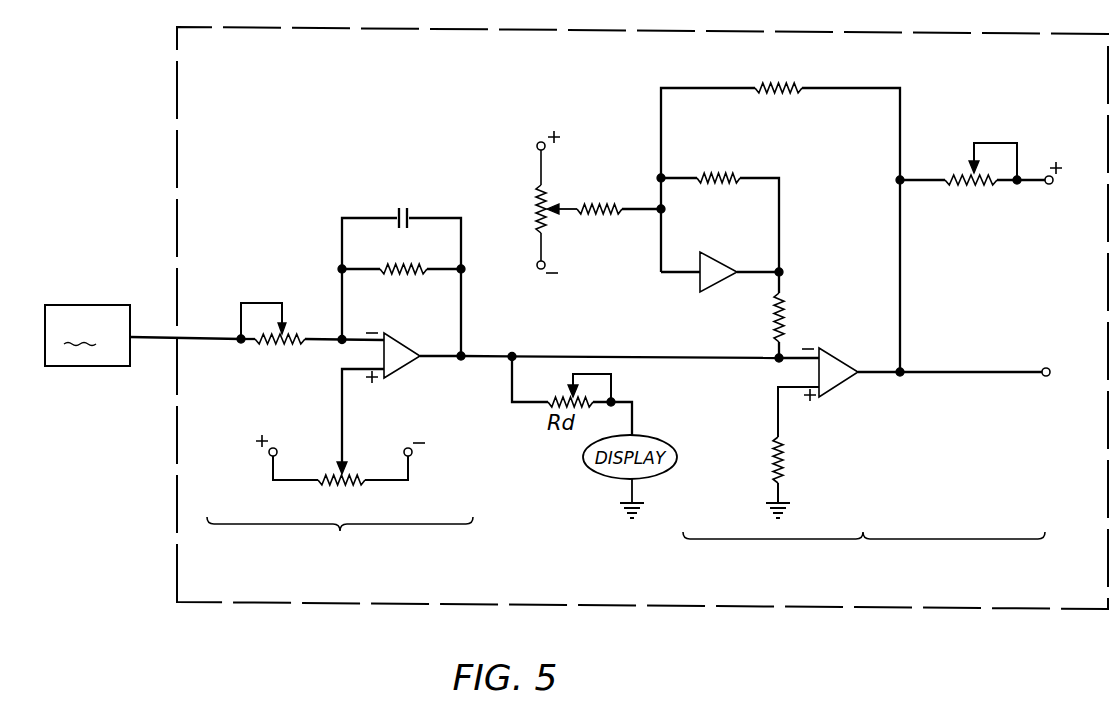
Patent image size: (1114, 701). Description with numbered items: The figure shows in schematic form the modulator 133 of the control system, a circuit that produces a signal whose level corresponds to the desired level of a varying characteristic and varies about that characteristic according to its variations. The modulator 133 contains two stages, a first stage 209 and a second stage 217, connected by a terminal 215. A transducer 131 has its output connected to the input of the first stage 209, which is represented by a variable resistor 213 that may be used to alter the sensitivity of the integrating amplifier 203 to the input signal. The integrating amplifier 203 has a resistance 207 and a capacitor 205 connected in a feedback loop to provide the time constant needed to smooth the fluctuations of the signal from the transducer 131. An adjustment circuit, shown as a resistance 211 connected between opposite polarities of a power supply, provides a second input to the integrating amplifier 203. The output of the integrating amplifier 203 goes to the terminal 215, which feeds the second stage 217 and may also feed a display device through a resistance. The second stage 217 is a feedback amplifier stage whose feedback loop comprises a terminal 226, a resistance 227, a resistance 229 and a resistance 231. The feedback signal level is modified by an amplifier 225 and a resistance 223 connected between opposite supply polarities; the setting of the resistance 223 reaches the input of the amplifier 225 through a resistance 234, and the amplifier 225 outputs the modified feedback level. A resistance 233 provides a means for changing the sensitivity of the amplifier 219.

The transducer 131 is at (87, 335).
The modulator 133 is at (181, 159).
The integrating amplifier 203 is at (399, 350).
The capacitor 205 is at (401, 269).
The resistance 207 is at (401, 284).
The first stage 209 is at (340, 545).
The resistance 211 is at (340, 440).
The variable resistor 213 is at (289, 336).
The terminal 215 is at (618, 343).
The second stage 217 is at (864, 556).
The amplifier 219 is at (930, 426).
The resistance 223 is at (544, 195).
The amplifier 225 is at (722, 257).
The terminal 226 is at (875, 179).
The resistance 227 is at (780, 214).
The resistance 229 is at (718, 209).
The resistance 231 is at (801, 317).
The resistance 233 is at (981, 179).
The resistance 234 is at (606, 196).